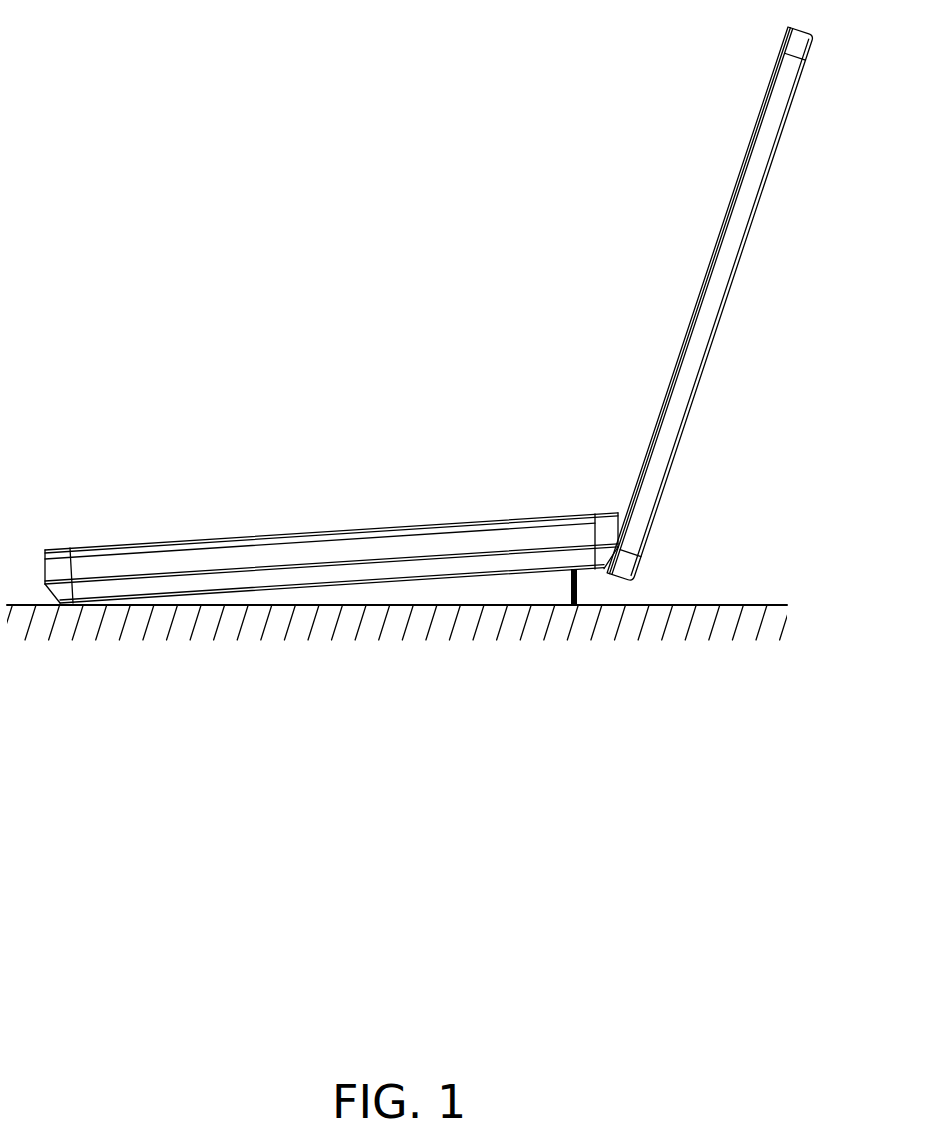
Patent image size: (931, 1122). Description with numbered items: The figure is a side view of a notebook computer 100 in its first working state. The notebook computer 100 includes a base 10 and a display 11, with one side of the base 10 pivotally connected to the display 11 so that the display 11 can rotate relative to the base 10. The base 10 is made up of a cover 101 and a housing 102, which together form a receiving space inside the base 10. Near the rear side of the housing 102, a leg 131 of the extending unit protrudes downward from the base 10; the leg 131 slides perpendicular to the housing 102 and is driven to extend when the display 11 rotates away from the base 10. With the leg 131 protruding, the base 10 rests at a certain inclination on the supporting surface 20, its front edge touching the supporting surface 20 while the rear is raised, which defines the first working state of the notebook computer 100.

The notebook computer 100 is at (379, 40).
The display 11 is at (787, 70).
The base 10 is at (170, 473).
The cover 101 is at (78, 553).
The housing 102 is at (113, 603).
The leg 131 is at (573, 590).
The supporting surface 20 is at (706, 614).